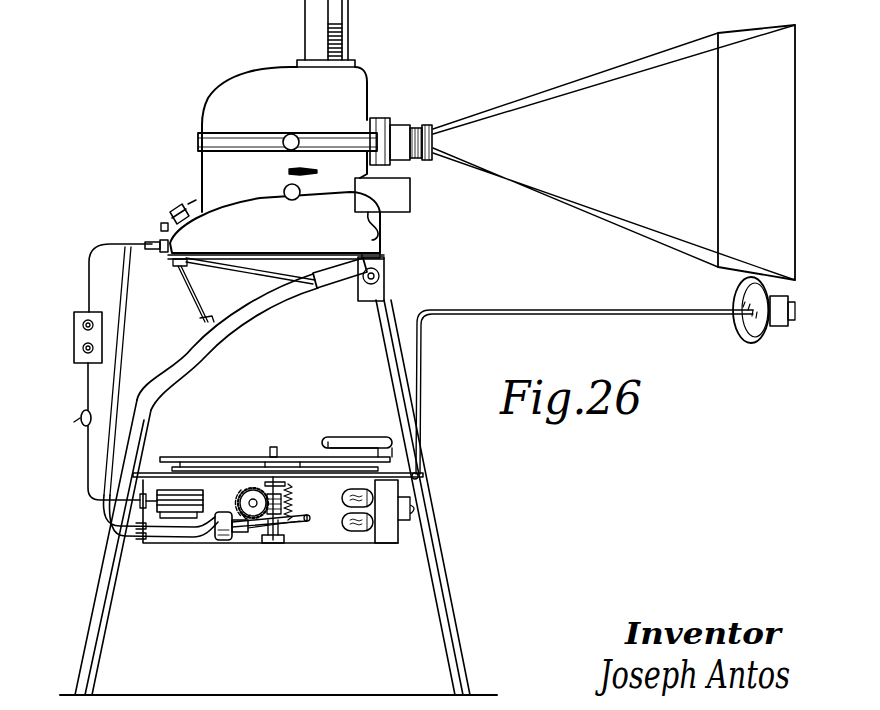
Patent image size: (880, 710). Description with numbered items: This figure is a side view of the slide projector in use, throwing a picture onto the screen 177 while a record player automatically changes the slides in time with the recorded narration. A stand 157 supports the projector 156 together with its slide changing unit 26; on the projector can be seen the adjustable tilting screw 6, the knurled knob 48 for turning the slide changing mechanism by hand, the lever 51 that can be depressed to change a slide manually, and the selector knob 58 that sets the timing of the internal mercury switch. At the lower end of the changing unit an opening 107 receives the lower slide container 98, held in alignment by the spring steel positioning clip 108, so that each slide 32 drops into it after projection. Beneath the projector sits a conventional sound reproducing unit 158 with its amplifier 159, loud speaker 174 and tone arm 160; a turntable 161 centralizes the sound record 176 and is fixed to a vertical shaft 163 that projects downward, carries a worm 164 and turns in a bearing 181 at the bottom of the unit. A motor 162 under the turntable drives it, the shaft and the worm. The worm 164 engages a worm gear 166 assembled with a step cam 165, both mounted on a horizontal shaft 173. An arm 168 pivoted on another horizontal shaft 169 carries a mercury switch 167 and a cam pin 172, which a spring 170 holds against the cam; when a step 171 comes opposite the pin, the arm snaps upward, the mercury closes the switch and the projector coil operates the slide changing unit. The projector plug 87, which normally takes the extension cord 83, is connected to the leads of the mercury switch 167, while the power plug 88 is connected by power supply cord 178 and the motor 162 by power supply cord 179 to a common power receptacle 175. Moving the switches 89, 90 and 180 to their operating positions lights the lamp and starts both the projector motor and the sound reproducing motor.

The adjustable tilting screw 6 is at (190, 203).
The slide changing unit 26 is at (352, 62).
The slide 32 is at (345, 35).
The knurled knob 48 is at (298, 197).
The lever 51 is at (288, 171).
The selector knob 58 is at (291, 134).
The extension cord 83 is at (118, 362).
The plug 87 is at (168, 258).
The plug 88 is at (155, 241).
The switch 89 is at (163, 222).
The switch 90 is at (177, 205).
The lower slide container 98 is at (306, 46).
The opening 107 is at (385, 172).
The spring steel positioning clip 108 is at (383, 228).
The projector 156 is at (215, 103).
The stand 157 is at (270, 314).
The sound reproducing unit 158 is at (390, 493).
The amplifier 159 is at (386, 545).
The tone arm 160 is at (382, 437).
The turntable 161 is at (200, 458).
The motor 162 is at (165, 490).
The vertical shaft 163 is at (273, 447).
The worm 164 is at (292, 521).
The step cam 165 is at (250, 488).
The worm gear 166 is at (257, 498).
The mercury switch 167 is at (214, 537).
The arm 168 is at (284, 543).
The horizontal shaft 169 is at (284, 540).
The spring 170 is at (303, 523).
The step 171 is at (245, 490).
The cam pin 172 is at (246, 536).
The horizontal shaft 173 is at (253, 530).
The loud speaker 174 is at (755, 344).
The common power receptacle 175 is at (76, 320).
The sound record 176 is at (297, 455).
The screen 177 is at (722, 162).
The power supply cord 178 is at (89, 268).
The power supply cord 179 is at (88, 470).
The power switch 180 is at (82, 412).
The bearing 181 is at (277, 533).